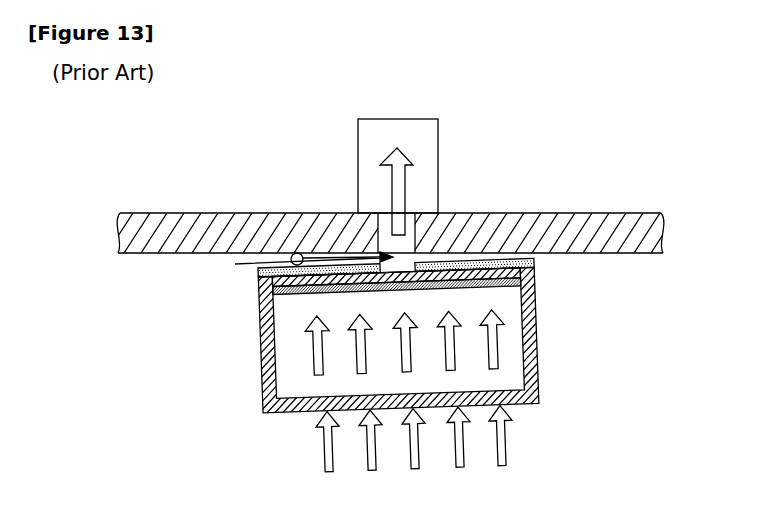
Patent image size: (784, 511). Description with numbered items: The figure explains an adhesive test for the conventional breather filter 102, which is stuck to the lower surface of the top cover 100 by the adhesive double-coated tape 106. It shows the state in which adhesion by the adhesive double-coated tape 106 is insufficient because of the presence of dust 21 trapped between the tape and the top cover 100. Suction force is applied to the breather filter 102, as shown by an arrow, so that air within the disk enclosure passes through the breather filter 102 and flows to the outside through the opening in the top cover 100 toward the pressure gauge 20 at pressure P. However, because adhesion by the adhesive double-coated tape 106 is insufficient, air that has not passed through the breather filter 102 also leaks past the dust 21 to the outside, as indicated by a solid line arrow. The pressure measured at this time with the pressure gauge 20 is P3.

The pressure gauge 20 is at (440, 145).
The dust 21 is at (297, 253).
The top cover 100 is at (547, 214).
The breather filter 102 is at (408, 366).
The adhesive double-coated tape 106 is at (476, 308).
The pressure P is at (578, 134).
The pressure P3 is at (630, 485).